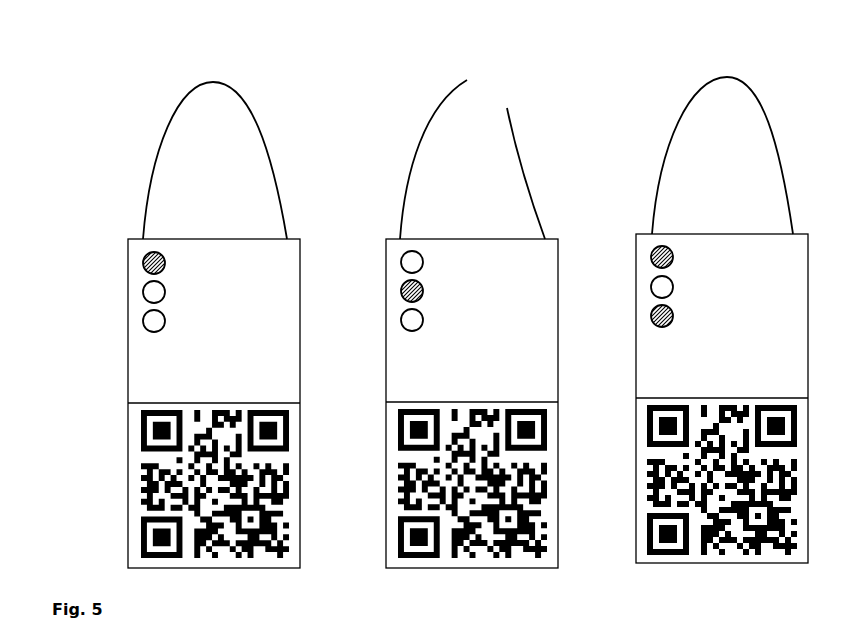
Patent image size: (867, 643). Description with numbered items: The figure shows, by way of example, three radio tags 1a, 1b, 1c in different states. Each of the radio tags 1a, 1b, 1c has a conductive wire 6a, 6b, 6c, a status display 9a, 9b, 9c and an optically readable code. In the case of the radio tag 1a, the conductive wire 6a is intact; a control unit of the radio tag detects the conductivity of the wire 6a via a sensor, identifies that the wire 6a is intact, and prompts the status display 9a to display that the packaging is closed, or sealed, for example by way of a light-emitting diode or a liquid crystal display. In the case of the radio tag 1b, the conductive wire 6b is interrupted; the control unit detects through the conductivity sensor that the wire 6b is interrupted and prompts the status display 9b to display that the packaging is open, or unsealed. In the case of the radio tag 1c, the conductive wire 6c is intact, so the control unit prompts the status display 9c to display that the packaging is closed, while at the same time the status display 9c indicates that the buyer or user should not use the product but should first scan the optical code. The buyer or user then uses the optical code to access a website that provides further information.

The radio tag 1a is at (182, 306).
The radio tag 1b is at (443, 306).
The radio tag 1c is at (696, 320).
The conductive wire 6a is at (253, 113).
The conductive wire 6b is at (520, 118).
The conductive wire 6c is at (778, 158).
The status display 9a is at (121, 252).
The status display 9b is at (385, 254).
The status display 9c is at (633, 248).